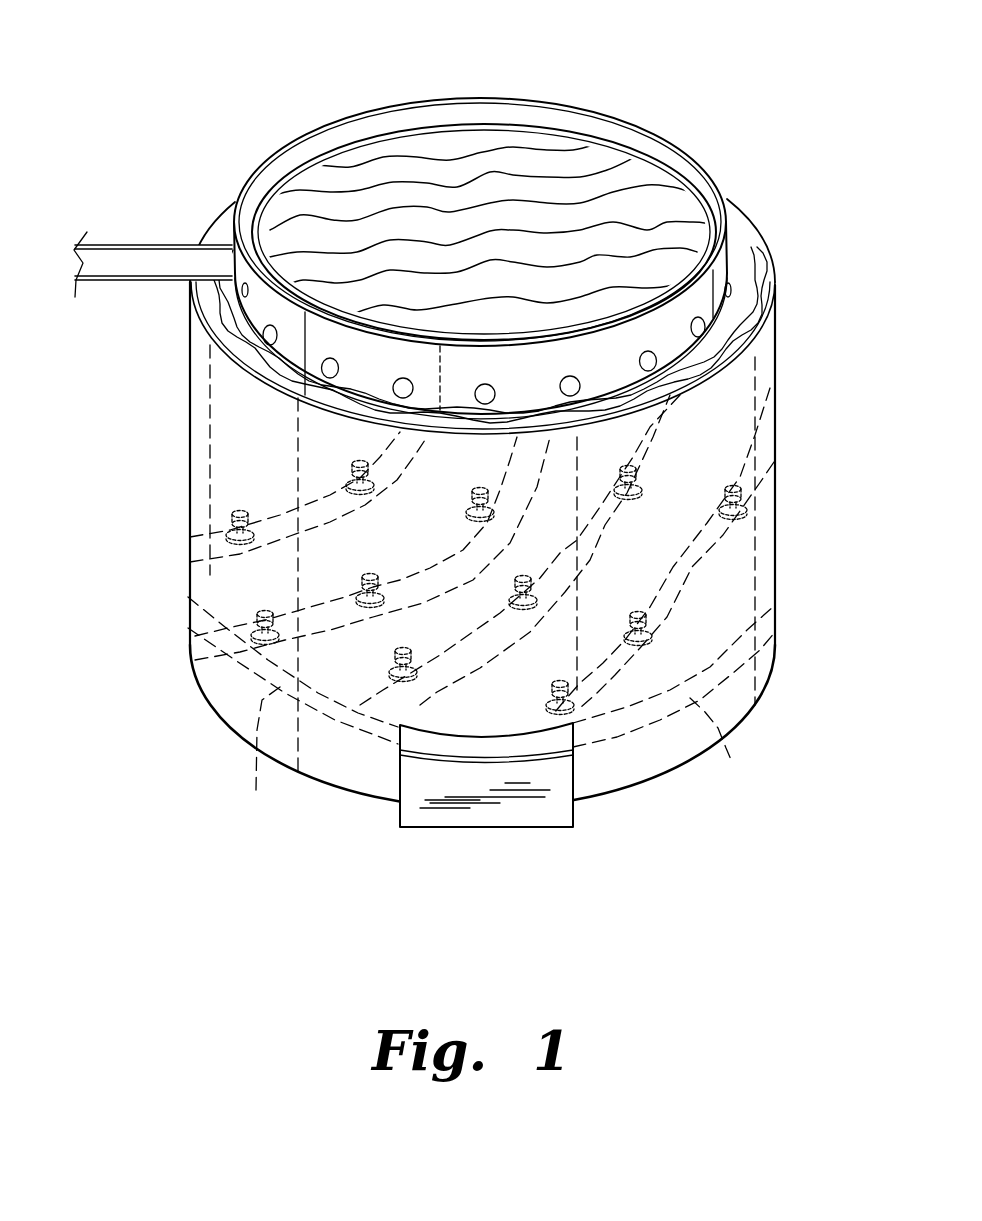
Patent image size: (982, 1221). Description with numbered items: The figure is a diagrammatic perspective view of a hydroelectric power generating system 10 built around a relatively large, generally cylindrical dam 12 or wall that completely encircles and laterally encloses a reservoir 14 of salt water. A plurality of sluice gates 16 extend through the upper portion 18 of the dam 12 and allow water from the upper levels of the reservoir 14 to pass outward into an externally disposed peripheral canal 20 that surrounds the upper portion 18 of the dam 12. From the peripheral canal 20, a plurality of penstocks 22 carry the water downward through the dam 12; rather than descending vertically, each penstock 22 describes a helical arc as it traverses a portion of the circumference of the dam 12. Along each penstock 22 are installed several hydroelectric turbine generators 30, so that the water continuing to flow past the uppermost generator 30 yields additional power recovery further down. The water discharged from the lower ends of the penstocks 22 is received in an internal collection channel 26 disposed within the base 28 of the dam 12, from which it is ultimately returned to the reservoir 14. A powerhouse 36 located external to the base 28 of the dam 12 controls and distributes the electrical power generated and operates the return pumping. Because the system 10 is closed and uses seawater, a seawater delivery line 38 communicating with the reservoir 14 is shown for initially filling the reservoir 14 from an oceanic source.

The hydroelectric power generating system 10 is at (268, 866).
The dam 12 is at (190, 430).
The reservoir 14 is at (420, 167).
The sluice gate 16 is at (322, 372).
The upper portion 18 is at (650, 145).
The peripheral canal 20 is at (752, 275).
The penstock 22 is at (410, 539).
The internal collection channel 26 is at (255, 783).
The base 28 is at (357, 793).
The hydroelectric turbine generator 30 is at (348, 468).
The powerhouse 36 is at (486, 828).
The seawater delivery line 38 is at (142, 247).